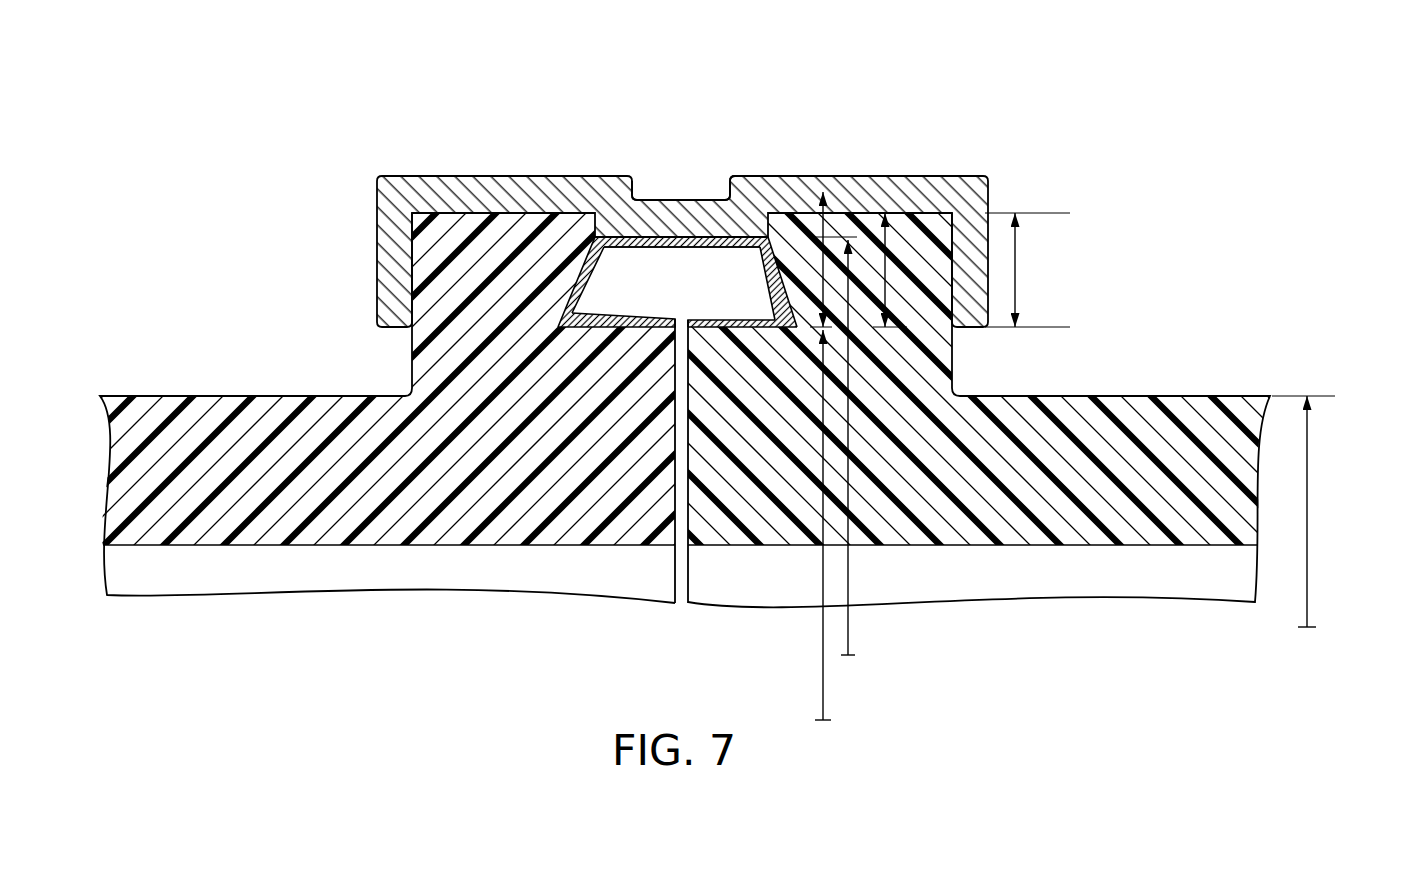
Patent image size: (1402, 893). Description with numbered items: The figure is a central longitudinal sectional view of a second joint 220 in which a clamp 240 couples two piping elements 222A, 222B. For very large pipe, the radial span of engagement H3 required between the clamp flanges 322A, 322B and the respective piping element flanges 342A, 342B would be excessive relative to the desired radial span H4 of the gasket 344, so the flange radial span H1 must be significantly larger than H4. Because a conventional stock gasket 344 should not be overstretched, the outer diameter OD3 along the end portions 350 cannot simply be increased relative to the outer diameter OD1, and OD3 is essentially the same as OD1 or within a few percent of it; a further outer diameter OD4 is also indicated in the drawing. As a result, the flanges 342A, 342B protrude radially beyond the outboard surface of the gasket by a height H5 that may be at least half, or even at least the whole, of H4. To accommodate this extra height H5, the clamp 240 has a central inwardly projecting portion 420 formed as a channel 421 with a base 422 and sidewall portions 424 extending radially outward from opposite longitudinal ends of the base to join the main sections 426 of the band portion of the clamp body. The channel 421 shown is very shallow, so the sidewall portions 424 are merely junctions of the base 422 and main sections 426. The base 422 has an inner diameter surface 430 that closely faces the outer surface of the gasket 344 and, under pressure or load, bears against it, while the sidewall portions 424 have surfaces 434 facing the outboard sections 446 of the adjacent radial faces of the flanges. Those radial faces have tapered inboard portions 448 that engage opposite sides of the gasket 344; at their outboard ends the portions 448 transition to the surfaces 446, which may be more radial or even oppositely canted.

The second joint 220 is at (1013, 137).
The piping element 222A is at (273, 513).
The piping element 222B is at (1187, 366).
The clamp 240 is at (925, 158).
The clamp flange 322A is at (385, 255).
The clamp flange 322B is at (990, 205).
The piping element flange 342A is at (503, 340).
The piping element flange 342B is at (905, 360).
The gasket 344 is at (653, 334).
The end portion 350 is at (613, 490).
The central inwardly projecting portion 420 is at (681, 200).
The channel 421 is at (658, 198).
The base 422 is at (650, 237).
The sidewall portion 424 is at (748, 205).
The main section 426 is at (900, 177).
The inner diameter surface 430 is at (637, 250).
The surface 434 is at (790, 260).
The outboard section 446 is at (597, 245).
The inboard portion 448 is at (580, 313).
The flange radial span H1 is at (890, 262).
The radial span of engagement H3 is at (1017, 262).
The gasket radial span H4 is at (820, 305).
The flange protrusion height H5 is at (823, 192).
The outer diameter OD1 is at (1307, 510).
The outer diameter along end portions OD3 is at (823, 690).
The outer diameter OD4 is at (848, 570).